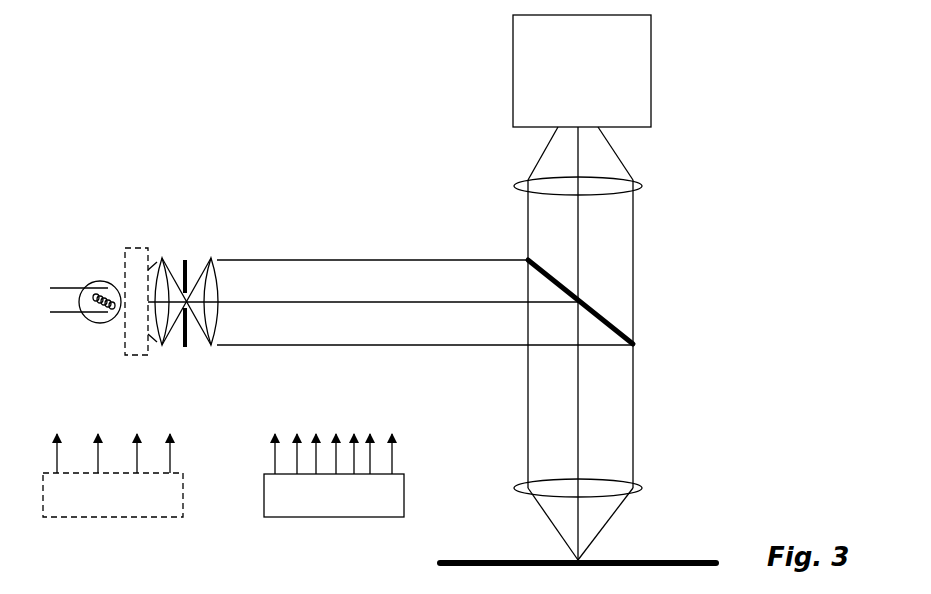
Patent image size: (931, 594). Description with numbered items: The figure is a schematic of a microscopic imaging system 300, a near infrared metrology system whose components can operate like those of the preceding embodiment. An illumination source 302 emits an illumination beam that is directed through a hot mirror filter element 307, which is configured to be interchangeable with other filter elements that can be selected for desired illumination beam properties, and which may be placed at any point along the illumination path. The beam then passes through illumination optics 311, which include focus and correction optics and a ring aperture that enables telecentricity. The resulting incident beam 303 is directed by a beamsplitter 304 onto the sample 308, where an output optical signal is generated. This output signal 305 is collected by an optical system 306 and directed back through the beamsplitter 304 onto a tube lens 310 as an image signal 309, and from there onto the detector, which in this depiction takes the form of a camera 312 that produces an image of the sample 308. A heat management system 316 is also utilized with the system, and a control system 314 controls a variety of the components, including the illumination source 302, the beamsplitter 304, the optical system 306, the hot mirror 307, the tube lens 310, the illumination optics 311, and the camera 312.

The microscopic imaging system 300 is at (799, 78).
The illumination source 302 is at (84, 270).
The incident beam 303 is at (303, 262).
The beamsplitter 304 is at (618, 322).
The output signal 305 is at (633, 365).
The optical system 306 is at (642, 486).
The hot mirror filter element 307 is at (148, 249).
The sample 308 is at (437, 562).
The image signal 309 is at (633, 267).
The tube lens 310 is at (640, 185).
The illumination optics 311 is at (220, 236).
The camera 312 is at (652, 106).
The control system 314 is at (320, 517).
The heat management system 316 is at (137, 517).